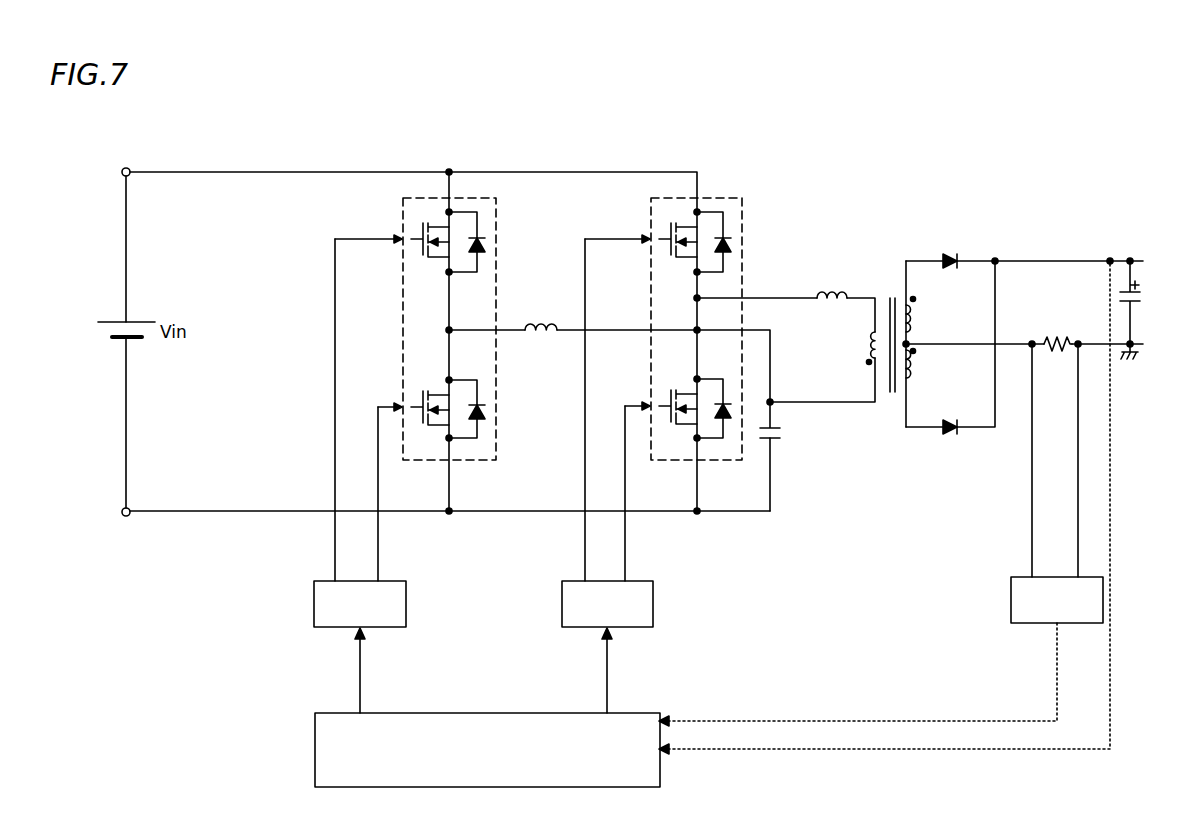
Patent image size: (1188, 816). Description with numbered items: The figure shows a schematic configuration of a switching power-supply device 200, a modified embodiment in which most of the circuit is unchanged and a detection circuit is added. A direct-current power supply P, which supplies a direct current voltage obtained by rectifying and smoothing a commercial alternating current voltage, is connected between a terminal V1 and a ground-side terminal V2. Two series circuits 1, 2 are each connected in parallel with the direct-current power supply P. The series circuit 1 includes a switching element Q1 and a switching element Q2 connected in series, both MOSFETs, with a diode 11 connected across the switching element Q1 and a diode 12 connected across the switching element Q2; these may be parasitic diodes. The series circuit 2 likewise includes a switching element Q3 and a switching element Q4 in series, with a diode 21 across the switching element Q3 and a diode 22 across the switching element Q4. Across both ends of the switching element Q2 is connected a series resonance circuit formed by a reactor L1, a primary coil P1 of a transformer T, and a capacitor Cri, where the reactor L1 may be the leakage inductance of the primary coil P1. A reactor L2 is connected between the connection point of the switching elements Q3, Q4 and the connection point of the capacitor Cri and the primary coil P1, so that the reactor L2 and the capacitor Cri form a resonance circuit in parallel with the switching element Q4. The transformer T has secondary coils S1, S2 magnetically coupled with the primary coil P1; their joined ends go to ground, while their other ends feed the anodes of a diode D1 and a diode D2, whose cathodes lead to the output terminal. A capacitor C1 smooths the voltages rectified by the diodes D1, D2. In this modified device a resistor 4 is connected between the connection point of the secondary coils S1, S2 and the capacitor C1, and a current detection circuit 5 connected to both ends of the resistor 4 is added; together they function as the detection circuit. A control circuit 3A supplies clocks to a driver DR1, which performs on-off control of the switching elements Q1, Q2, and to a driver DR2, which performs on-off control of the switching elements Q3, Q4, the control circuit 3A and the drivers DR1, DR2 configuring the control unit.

The switching power-supply device 200 is at (830, 186).
The series circuit 1 is at (692, 301).
The series circuit 2 is at (433, 301).
The diode 11 is at (729, 247).
The diode 12 is at (729, 403).
The diode 21 is at (483, 247).
The diode 22 is at (483, 414).
The control circuit 3A is at (480, 712).
The resistor 4 is at (1050, 338).
The current detection circuit 5 is at (1013, 577).
The switching element Q1 is at (664, 227).
The switching element Q2 is at (664, 394).
The switching element Q3 is at (416, 227).
The switching element Q4 is at (416, 395).
The reactor L1 is at (822, 290).
The reactor L2 is at (547, 322).
The capacitor Cri is at (782, 440).
The transformer T is at (889, 325).
The primary coil P1 is at (866, 341).
The secondary coil S1 is at (914, 316).
The secondary coil S2 is at (914, 366).
The diode D1 is at (945, 253).
The diode D2 is at (948, 435).
The capacitor C1 is at (1133, 305).
The driver DR1 is at (654, 603).
The driver DR2 is at (407, 603).
The terminal V1 is at (126, 167).
The terminal V2 is at (122, 508).
The direct-current power supply P is at (150, 320).